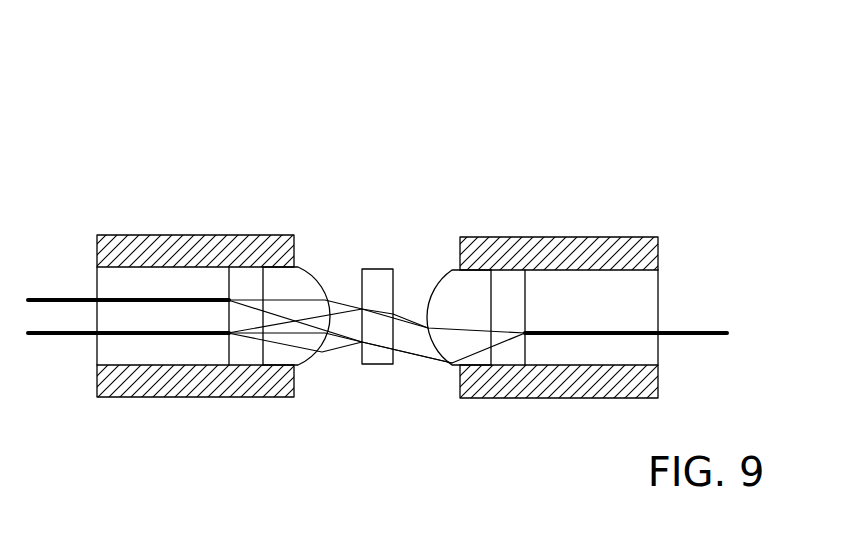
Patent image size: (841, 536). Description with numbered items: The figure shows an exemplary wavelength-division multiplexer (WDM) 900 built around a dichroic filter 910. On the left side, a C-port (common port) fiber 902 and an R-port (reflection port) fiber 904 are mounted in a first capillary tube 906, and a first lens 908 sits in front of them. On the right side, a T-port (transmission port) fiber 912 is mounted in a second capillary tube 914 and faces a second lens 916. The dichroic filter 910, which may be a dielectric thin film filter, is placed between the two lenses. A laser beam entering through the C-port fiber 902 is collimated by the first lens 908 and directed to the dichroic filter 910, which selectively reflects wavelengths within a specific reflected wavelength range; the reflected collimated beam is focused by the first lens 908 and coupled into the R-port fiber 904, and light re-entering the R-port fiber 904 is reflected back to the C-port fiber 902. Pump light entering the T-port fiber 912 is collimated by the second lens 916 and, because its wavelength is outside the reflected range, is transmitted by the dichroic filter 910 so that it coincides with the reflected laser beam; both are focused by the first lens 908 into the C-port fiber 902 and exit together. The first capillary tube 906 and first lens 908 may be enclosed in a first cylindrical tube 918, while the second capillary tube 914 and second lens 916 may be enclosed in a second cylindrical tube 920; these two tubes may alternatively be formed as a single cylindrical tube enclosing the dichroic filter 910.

The wavelength-division multiplexer 900 is at (126, 92).
The C-port fiber 902 is at (41, 296).
The R-port fiber 904 is at (38, 338).
The first capillary tube 906 is at (147, 283).
The first lens 908 is at (303, 288).
The dichroic filter 910 is at (386, 268).
The T-port fiber 912 is at (708, 332).
The second capillary tube 914 is at (605, 285).
The second lens 916 is at (472, 285).
The first cylindrical tube 918 is at (231, 236).
The second cylindrical tube 920 is at (557, 240).